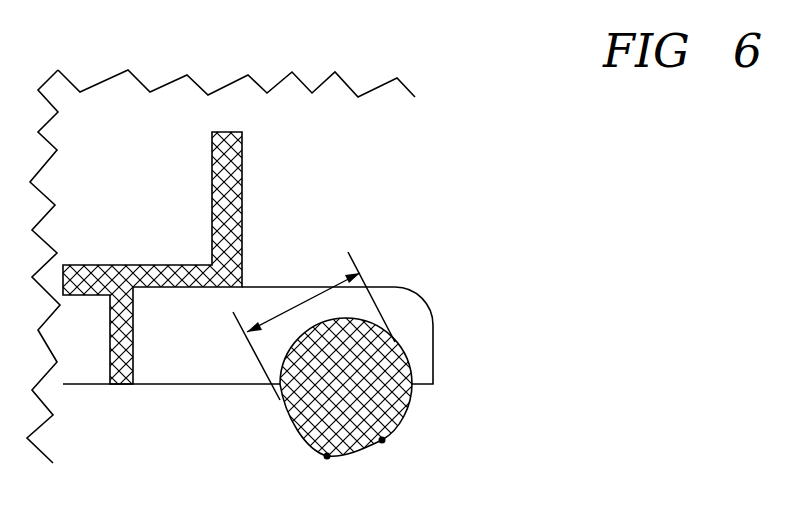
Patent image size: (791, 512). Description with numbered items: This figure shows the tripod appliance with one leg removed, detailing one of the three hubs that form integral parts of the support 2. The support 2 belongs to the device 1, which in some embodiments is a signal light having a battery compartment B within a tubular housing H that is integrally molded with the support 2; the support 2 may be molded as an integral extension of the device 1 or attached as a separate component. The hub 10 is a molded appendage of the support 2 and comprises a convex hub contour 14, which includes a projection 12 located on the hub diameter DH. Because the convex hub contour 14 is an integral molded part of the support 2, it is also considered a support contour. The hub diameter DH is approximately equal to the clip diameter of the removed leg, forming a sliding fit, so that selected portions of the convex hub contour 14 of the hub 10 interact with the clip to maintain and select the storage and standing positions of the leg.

The device 1 is at (230, 220).
The support 2 is at (422, 333).
The hub 10 is at (403, 413).
The projection 12 is at (327, 456).
The convex hub contour 14 is at (382, 440).
The battery compartment B is at (162, 209).
The tubular housing H is at (232, 182).
The hub diameter DH is at (360, 273).